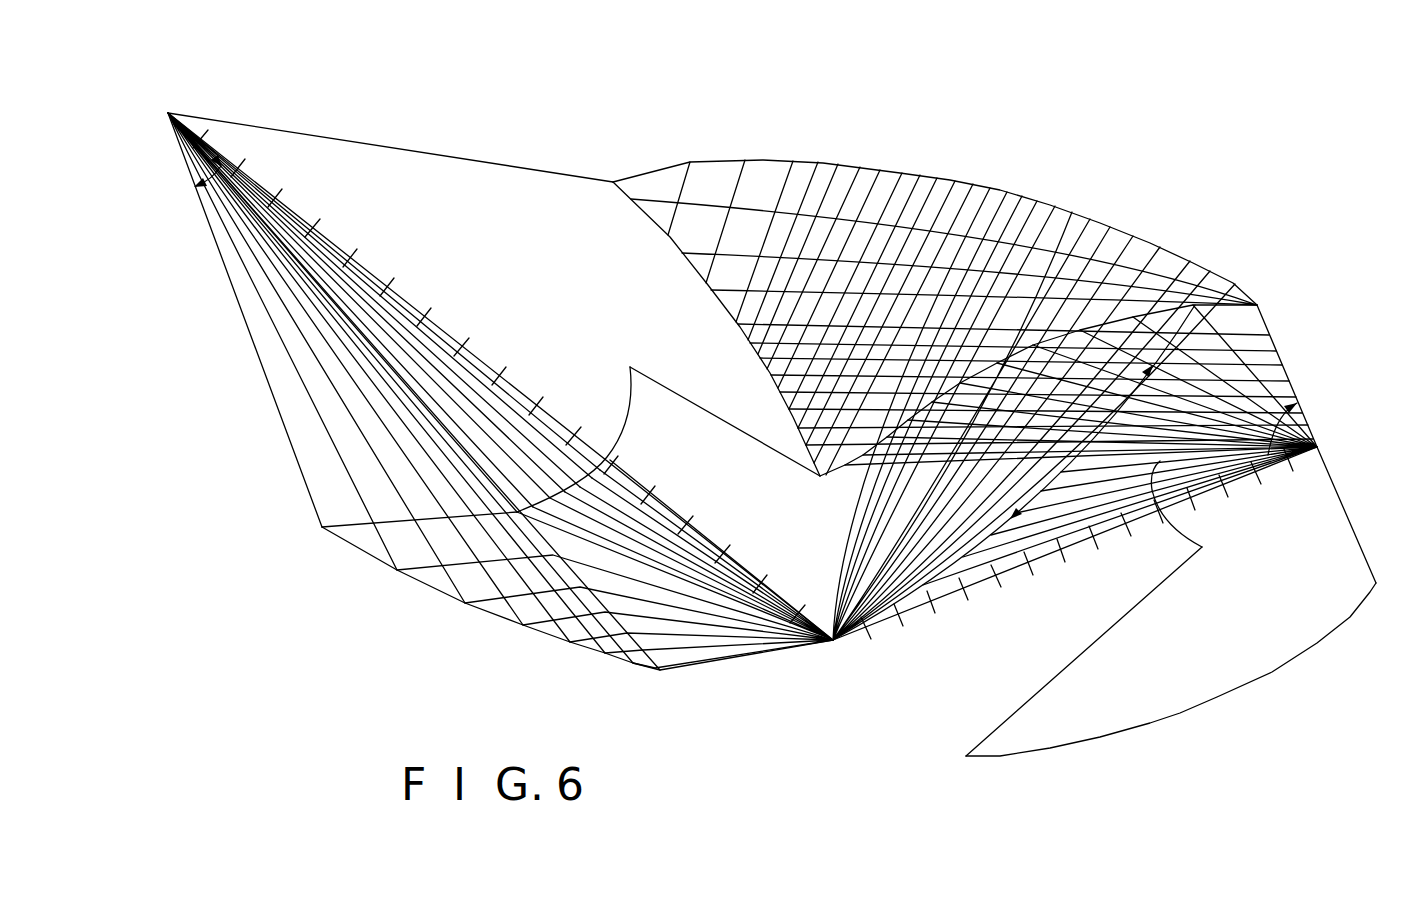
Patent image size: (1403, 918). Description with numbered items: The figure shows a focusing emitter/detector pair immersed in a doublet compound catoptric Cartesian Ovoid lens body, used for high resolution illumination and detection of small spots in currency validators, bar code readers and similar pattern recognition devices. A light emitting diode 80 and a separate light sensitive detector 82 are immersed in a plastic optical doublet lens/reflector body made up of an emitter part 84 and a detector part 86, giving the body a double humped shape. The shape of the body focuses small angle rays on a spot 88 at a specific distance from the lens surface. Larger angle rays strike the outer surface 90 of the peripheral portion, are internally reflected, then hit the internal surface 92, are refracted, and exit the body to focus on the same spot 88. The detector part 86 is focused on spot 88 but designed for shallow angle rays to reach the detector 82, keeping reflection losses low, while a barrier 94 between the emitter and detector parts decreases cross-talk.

The light emitting diode 80 is at (1320, 446).
The light sensitive detector 82 is at (168, 113).
The emitter part 84 is at (1270, 676).
The detector part 86 is at (478, 158).
The spot 88 is at (832, 642).
The outer surface 90 is at (1168, 315).
The internal surface 92 is at (866, 490).
The barrier 94 is at (771, 168).